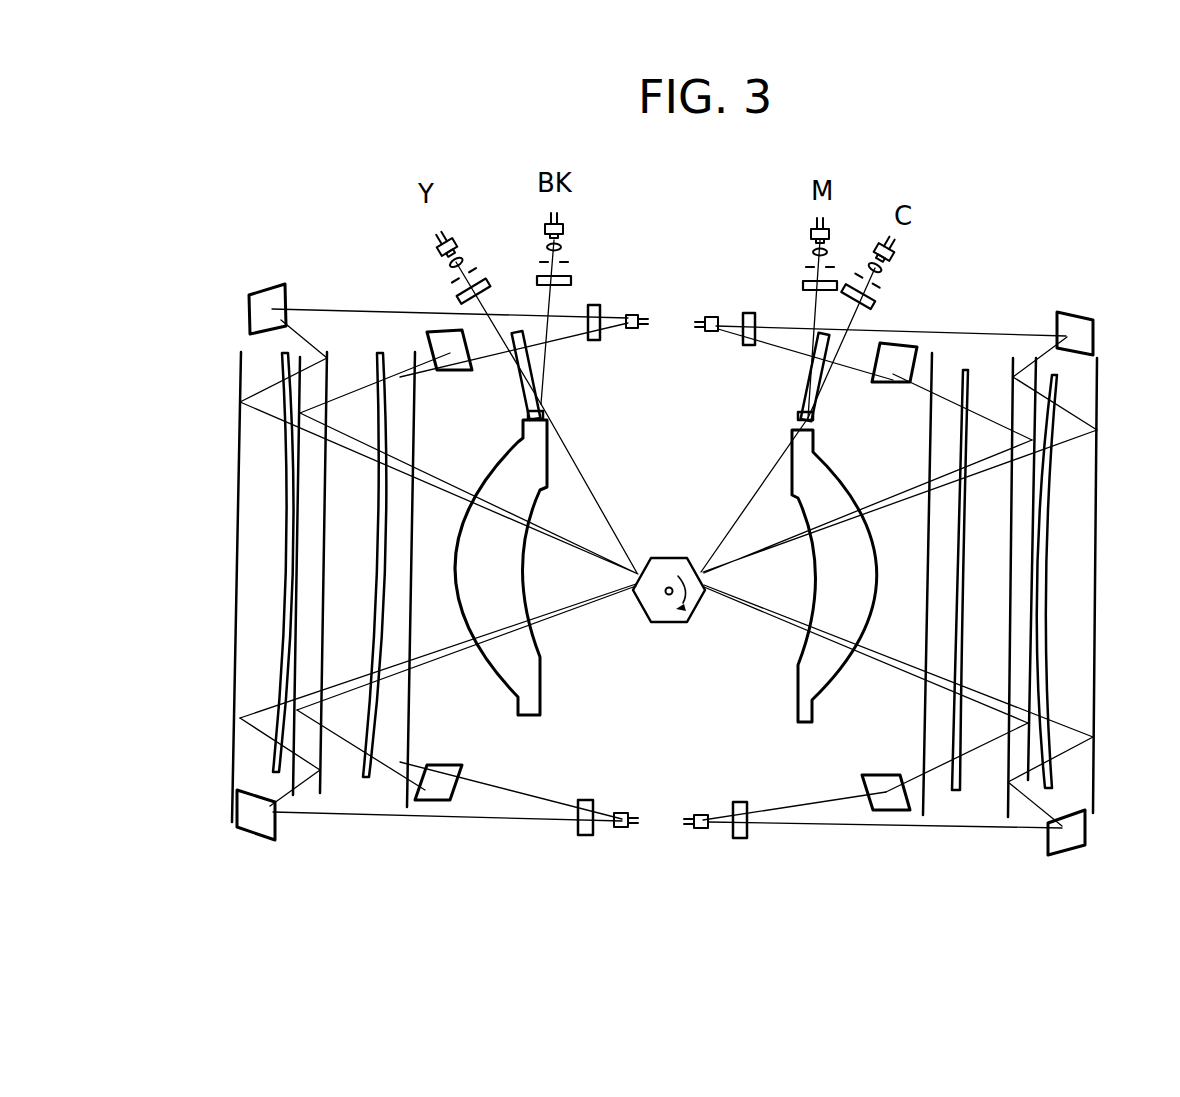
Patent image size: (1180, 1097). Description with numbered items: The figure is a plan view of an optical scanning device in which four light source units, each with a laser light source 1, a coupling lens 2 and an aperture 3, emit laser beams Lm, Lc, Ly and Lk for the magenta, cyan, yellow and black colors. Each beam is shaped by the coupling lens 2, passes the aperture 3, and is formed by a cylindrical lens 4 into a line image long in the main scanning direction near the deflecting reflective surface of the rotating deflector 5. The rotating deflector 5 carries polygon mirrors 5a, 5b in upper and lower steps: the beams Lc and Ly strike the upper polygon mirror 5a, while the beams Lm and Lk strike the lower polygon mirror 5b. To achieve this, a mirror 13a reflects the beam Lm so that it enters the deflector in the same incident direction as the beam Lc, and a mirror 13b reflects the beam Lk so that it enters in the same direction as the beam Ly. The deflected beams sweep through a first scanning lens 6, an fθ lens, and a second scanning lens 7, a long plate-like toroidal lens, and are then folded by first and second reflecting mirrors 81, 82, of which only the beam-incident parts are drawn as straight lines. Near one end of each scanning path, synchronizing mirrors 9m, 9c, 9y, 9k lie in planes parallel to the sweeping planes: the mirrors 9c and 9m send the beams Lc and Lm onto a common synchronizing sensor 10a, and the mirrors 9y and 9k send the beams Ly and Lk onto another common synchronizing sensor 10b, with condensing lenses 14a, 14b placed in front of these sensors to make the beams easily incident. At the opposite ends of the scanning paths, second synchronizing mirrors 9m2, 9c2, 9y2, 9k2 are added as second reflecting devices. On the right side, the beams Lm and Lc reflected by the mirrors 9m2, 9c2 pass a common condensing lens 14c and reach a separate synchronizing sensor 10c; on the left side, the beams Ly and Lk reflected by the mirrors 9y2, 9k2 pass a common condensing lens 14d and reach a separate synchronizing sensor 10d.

The laser light source 1 is at (452, 238).
The coupling lens 2 is at (463, 262).
The aperture 3 is at (472, 280).
The cylindrical lens 4 is at (490, 296).
The rotating deflector 5 is at (676, 597).
The polygon mirror 5a is at (676, 554).
The polygon mirror 5b is at (672, 556).
The first scanning lens 6 is at (528, 636).
The second scanning lens 7 is at (283, 450).
The first reflecting mirror 81 is at (240, 470).
The second reflecting mirror 82 is at (322, 590).
The synchronizing mirror 9k is at (258, 835).
The second synchronizing mirror 9k2 is at (268, 290).
The synchronizing mirror 9y is at (461, 778).
The second synchronizing mirror 9y2 is at (455, 362).
The synchronizing mirror 9m is at (1075, 848).
The second synchronizing mirror 9m2 is at (1073, 318).
The synchronizing mirror 9c is at (880, 782).
The second synchronizing mirror 9c2 is at (893, 372).
The synchronizing sensor 10a is at (703, 831).
The synchronizing sensor 10b is at (622, 830).
The synchronizing sensor 10c is at (711, 316).
The synchronizing sensor 10d is at (633, 313).
The mirror 13a is at (813, 405).
The mirror 13b is at (521, 397).
The condensing lens 14a is at (742, 841).
The condensing lens 14b is at (587, 838).
The common condensing lens 14c is at (750, 347).
The common condensing lens 14d is at (601, 332).
The laser beam Lk is at (546, 356).
The laser beam Ly is at (498, 353).
The laser beam Lm is at (812, 300).
The laser beam Lc is at (900, 337).